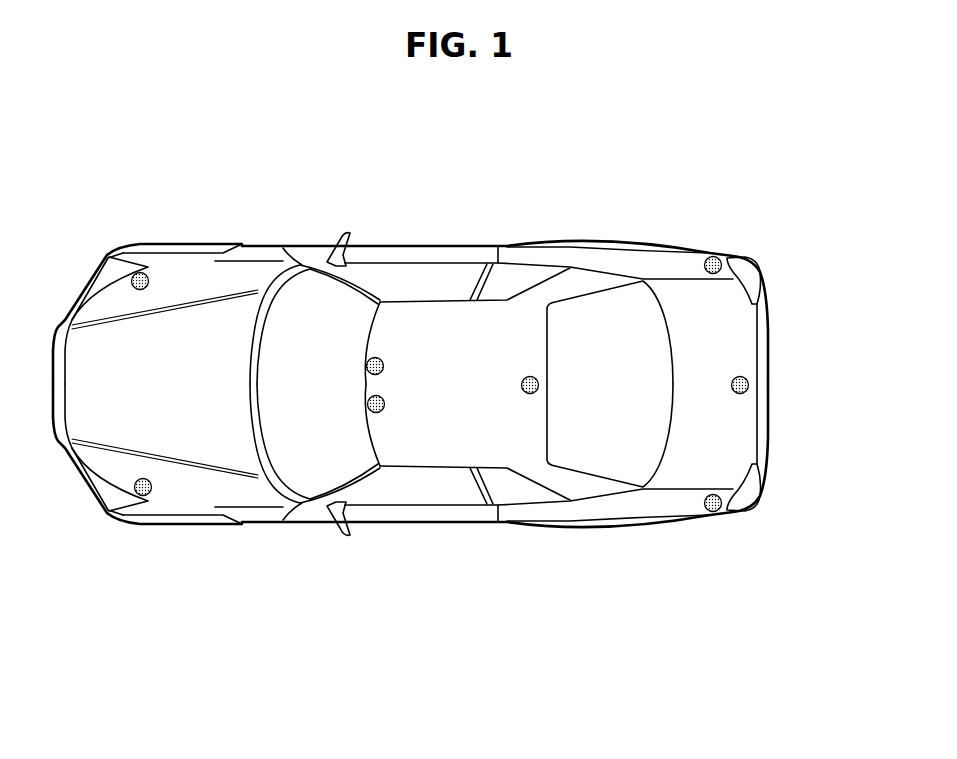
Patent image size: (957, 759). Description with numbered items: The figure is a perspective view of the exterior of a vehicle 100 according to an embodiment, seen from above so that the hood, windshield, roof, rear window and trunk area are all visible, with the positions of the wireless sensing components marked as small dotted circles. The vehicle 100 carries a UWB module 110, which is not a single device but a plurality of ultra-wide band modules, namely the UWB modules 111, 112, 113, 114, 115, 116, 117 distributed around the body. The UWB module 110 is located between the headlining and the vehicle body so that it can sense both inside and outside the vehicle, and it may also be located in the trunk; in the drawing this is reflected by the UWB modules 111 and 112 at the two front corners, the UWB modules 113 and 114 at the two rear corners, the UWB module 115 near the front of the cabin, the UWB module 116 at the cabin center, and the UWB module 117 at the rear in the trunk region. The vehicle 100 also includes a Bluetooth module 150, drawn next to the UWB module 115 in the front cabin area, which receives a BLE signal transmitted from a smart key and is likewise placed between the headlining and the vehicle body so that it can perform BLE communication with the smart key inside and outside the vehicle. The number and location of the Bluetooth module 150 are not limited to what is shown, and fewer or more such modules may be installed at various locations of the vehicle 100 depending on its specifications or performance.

The vehicle 100 is at (227, 225).
The UWB module 110 is at (498, 432).
The UWB module 111 is at (146, 271).
The UWB module 112 is at (148, 497).
The UWB module 113 is at (712, 256).
The UWB module 114 is at (711, 513).
The UWB module 115 is at (384, 366).
The UWB module 116 is at (521, 385).
The UWB module 117 is at (749, 384).
The Bluetooth module 150 is at (385, 404).